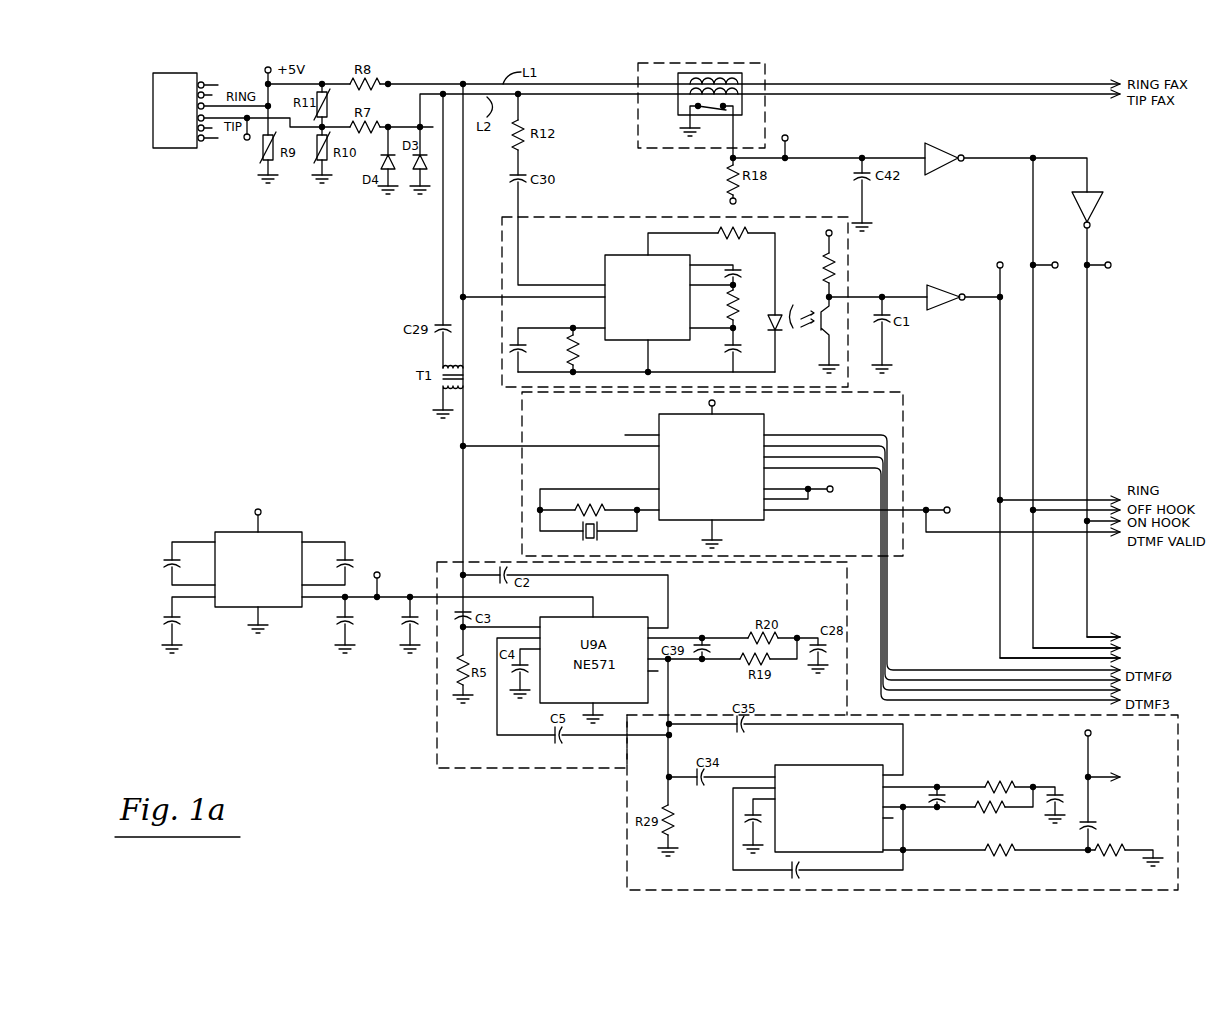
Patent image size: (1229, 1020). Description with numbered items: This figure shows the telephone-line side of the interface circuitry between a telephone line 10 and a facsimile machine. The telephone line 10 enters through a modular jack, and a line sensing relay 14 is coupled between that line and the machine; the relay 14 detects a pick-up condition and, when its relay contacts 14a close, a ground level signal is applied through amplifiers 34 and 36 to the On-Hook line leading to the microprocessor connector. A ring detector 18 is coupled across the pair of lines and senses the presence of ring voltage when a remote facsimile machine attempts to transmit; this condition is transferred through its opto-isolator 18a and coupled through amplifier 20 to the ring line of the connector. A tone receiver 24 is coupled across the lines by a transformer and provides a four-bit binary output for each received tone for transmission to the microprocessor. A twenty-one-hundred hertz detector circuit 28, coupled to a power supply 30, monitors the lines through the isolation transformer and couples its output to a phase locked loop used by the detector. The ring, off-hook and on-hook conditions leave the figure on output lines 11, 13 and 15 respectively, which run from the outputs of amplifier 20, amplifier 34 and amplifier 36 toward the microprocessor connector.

The telephone line 10 is at (205, 69).
The line sensing relay 14 is at (651, 72).
The relay contacts 14a is at (717, 138).
The ring detector 18 is at (633, 207).
The opto-isolator 18a is at (810, 329).
The amplifier circuit 20 is at (955, 286).
The tone receiver 24 is at (791, 415).
The 2100 Hz detector circuit 28 is at (1001, 735).
The power supply 30 is at (346, 531).
The amplifier 34 is at (952, 148).
The amplifier 36 is at (1093, 222).
The ring signal output 11 is at (1072, 658).
The off hook output 13 is at (1076, 642).
The on hook output 15 is at (1103, 629).